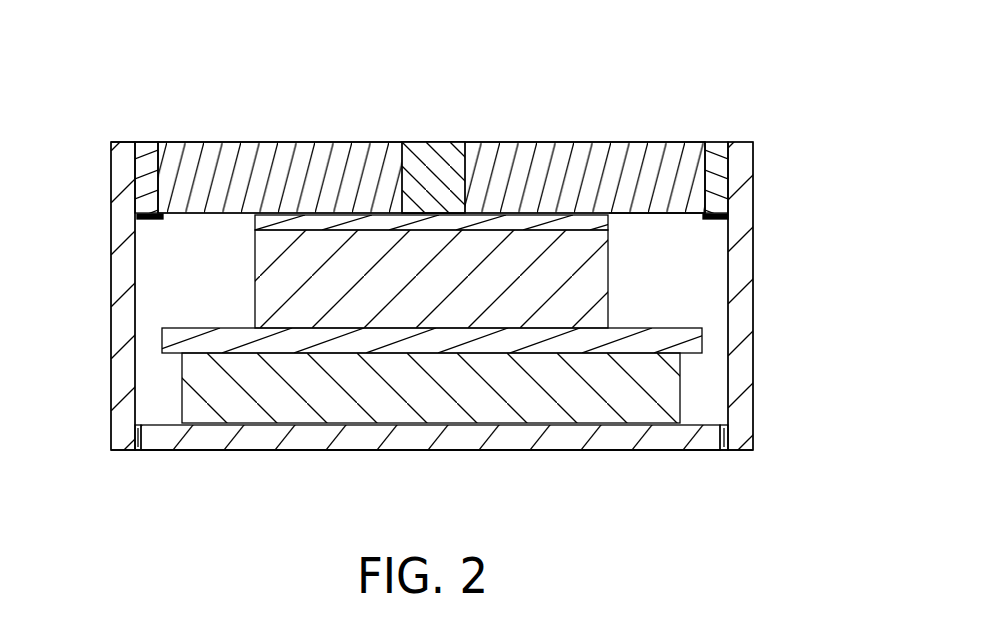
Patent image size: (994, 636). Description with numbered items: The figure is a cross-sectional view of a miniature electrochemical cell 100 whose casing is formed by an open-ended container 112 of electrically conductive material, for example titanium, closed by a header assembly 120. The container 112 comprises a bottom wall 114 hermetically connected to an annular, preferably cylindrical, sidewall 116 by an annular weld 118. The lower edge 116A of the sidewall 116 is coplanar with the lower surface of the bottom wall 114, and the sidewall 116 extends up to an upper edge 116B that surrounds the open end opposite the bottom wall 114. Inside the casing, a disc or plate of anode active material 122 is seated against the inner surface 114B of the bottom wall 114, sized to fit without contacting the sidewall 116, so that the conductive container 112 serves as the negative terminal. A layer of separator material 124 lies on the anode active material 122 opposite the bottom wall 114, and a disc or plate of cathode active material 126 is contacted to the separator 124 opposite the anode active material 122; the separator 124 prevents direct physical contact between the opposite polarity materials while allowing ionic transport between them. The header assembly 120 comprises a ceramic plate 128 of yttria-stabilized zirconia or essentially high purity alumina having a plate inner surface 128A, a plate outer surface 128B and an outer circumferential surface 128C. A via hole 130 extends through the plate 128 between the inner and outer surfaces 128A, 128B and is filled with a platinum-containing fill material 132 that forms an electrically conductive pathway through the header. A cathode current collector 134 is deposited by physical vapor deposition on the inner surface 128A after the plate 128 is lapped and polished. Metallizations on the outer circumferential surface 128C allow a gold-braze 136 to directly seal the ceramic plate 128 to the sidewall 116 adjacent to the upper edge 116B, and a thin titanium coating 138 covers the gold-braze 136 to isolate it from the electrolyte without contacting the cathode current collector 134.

The miniature electrochemical cell 100 is at (787, 88).
The container 112 is at (104, 315).
The bottom wall 114 is at (457, 451).
The inner surface of bottom wall 114B is at (255, 458).
The sidewall 116 is at (753, 413).
The lower edge of sidewall 116A is at (123, 451).
The upper edge of sidewall 116B is at (123, 141).
The annular weld 118 is at (723, 453).
The header assembly 120 is at (515, 82).
The anode active material 122 is at (667, 392).
The separator 124 is at (697, 343).
The cathode active material 126 is at (265, 300).
The ceramic plate 128 is at (542, 143).
The plate inner surface 128A is at (645, 226).
The plate outer surface 128B is at (613, 143).
The outer circumferential surface 128C is at (136, 192).
The via hole 130 is at (398, 142).
The platinum-containing fill material 132 is at (437, 160).
The cathode current collector 134 is at (262, 222).
The gold-braze 136 is at (148, 141).
The titanium coating 138 is at (728, 217).